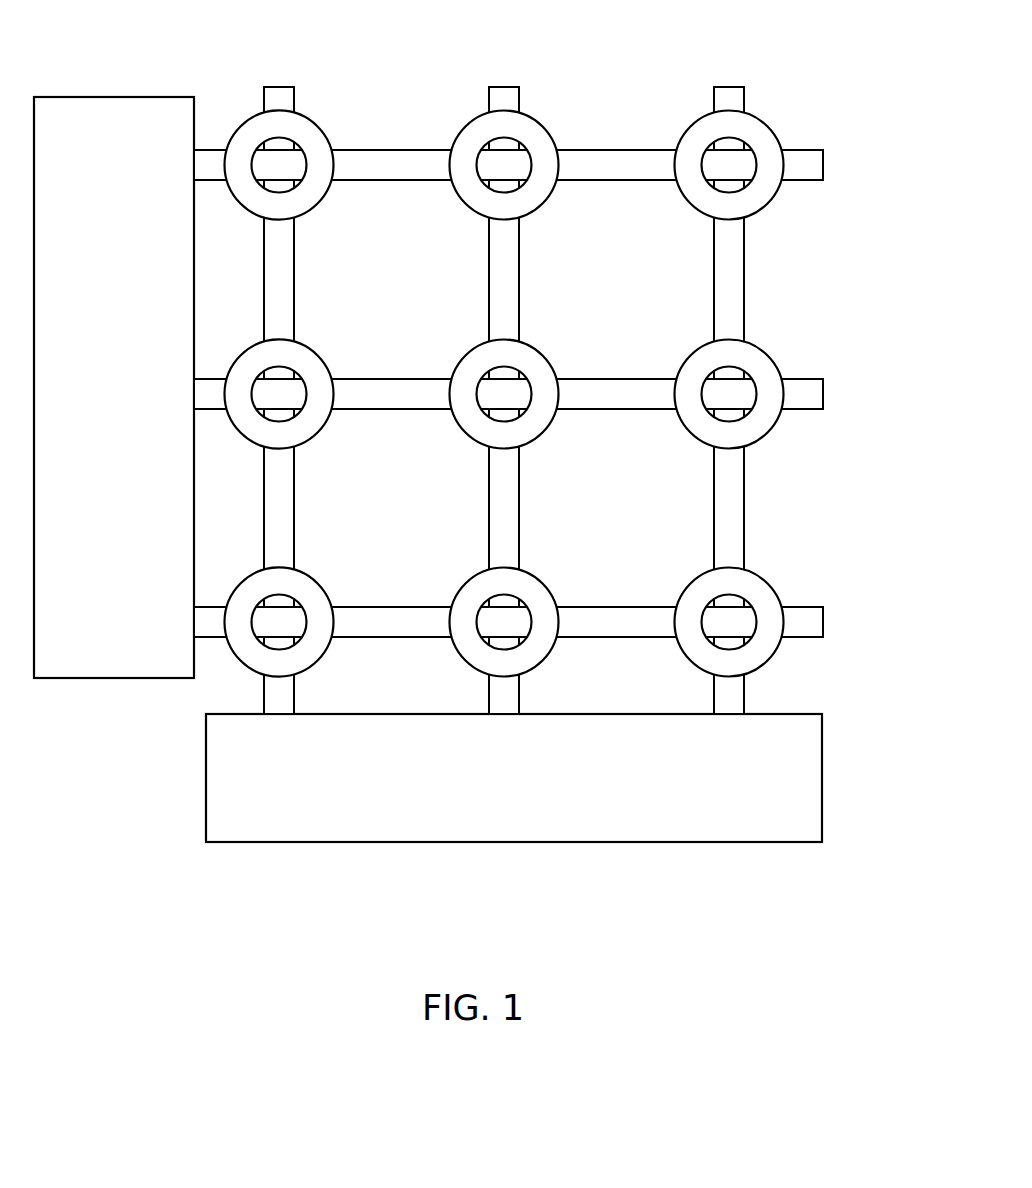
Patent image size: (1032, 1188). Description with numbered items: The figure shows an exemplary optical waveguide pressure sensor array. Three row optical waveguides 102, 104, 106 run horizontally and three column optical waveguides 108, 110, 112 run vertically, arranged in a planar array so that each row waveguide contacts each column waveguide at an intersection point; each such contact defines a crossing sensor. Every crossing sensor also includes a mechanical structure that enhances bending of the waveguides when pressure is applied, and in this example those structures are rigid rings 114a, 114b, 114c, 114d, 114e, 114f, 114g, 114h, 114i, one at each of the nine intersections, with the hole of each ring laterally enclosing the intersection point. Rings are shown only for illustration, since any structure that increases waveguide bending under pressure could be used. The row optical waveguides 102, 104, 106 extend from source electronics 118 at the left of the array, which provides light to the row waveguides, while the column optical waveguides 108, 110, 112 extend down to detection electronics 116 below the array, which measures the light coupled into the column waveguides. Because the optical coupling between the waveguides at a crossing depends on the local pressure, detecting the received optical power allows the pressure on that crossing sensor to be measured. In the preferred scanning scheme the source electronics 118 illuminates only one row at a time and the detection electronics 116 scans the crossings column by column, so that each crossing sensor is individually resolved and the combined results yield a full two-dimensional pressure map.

The row optical waveguide 102 is at (817, 165).
The row optical waveguide 104 is at (817, 394).
The row optical waveguide 106 is at (817, 622).
The column optical waveguide 108 is at (279, 93).
The column optical waveguide 110 is at (504, 93).
The column optical waveguide 112 is at (729, 93).
The rigid ring 114a is at (318, 135).
The rigid ring 114b is at (543, 135).
The rigid ring 114c is at (768, 135).
The rigid ring 114d is at (318, 364).
The rigid ring 114e is at (543, 364).
The rigid ring 114f is at (768, 364).
The rigid ring 114g is at (318, 593).
The rigid ring 114h is at (543, 593).
The rigid ring 114i is at (768, 593).
The detection electronics 116 is at (543, 792).
The source electronics 118 is at (137, 392).